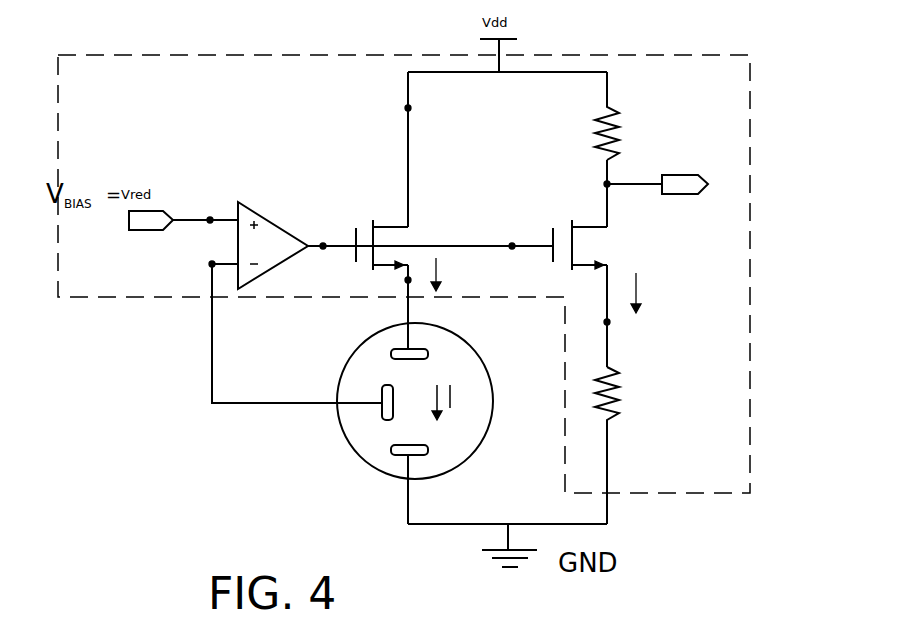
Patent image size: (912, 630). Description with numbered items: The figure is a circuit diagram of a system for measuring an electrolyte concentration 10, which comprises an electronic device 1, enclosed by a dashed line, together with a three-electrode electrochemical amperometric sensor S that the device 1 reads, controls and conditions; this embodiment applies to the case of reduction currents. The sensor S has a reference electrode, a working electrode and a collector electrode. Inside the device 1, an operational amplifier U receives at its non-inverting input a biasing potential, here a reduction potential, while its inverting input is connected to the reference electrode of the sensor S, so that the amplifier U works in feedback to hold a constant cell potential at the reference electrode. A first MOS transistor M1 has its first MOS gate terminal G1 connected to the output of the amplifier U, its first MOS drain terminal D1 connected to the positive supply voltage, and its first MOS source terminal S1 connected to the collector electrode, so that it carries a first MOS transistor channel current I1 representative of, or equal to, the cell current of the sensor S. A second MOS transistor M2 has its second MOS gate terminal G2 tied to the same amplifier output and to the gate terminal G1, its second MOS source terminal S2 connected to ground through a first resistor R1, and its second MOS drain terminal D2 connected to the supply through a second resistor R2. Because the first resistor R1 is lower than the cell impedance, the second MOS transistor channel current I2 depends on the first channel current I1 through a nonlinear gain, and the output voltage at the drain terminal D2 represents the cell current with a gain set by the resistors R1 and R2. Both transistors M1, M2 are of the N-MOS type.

The system for measuring an electrolyte concentration 10 is at (164, 429).
The electronic device 1 is at (712, 100).
The three-electrode electrochemical amperometric sensor S is at (370, 437).
The operational amplifier U is at (270, 238).
The first MOS gate terminal G1 is at (323, 244).
The first MOS drain terminal D1 is at (406, 109).
The first MOS source terminal S1 is at (405, 281).
The first MOS transistor M1 is at (398, 245).
The second MOS gate terminal G2 is at (512, 244).
The second MOS drain terminal D2 is at (638, 190).
The second MOS source terminal S2 is at (610, 322).
The second MOS transistor M2 is at (596, 245).
The first resistor R1 is at (625, 445).
The second resistor R2 is at (624, 116).
The first MOS transistor channel current I1 is at (448, 277).
The second MOS transistor channel current I2 is at (646, 293).